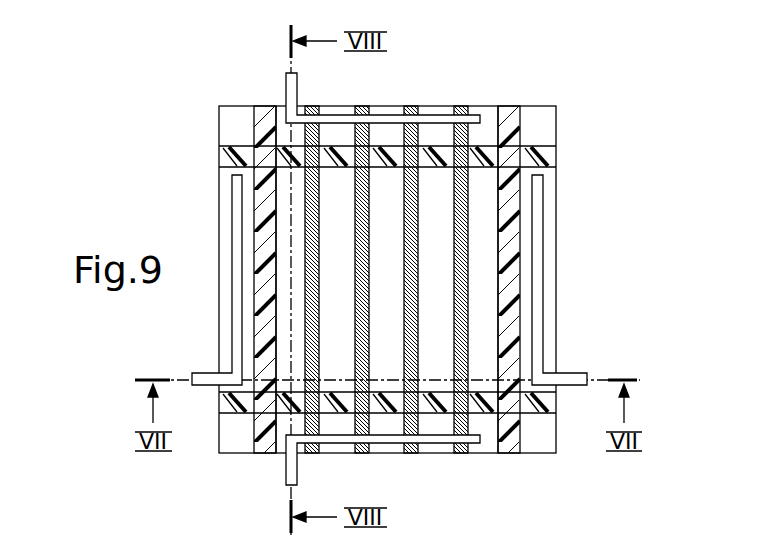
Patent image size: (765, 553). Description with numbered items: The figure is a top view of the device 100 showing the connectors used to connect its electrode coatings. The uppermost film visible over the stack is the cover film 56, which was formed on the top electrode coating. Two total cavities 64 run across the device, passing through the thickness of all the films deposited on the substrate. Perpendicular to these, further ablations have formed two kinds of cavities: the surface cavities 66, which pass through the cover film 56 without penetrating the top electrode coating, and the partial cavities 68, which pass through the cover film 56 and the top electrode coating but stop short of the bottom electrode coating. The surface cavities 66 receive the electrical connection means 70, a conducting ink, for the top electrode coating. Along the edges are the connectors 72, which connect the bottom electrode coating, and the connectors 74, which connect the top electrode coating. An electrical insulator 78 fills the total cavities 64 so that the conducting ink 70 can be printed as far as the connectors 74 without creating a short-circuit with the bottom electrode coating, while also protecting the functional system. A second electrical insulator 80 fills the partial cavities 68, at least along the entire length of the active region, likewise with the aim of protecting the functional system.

The device 100 is at (147, 144).
The cover film 56 is at (227, 125).
The total cavities 64 is at (548, 149).
The surface cavities 66 is at (456, 297).
The partial cavities 68 is at (270, 328).
The electrical connection means 70 is at (355, 234).
The connectors of the bottom electrode coating 72 is at (238, 233).
The connectors of the top electrode coating 74 is at (385, 120).
The electrical insulator 78 is at (550, 156).
The second electrical insulator 80 is at (272, 298).